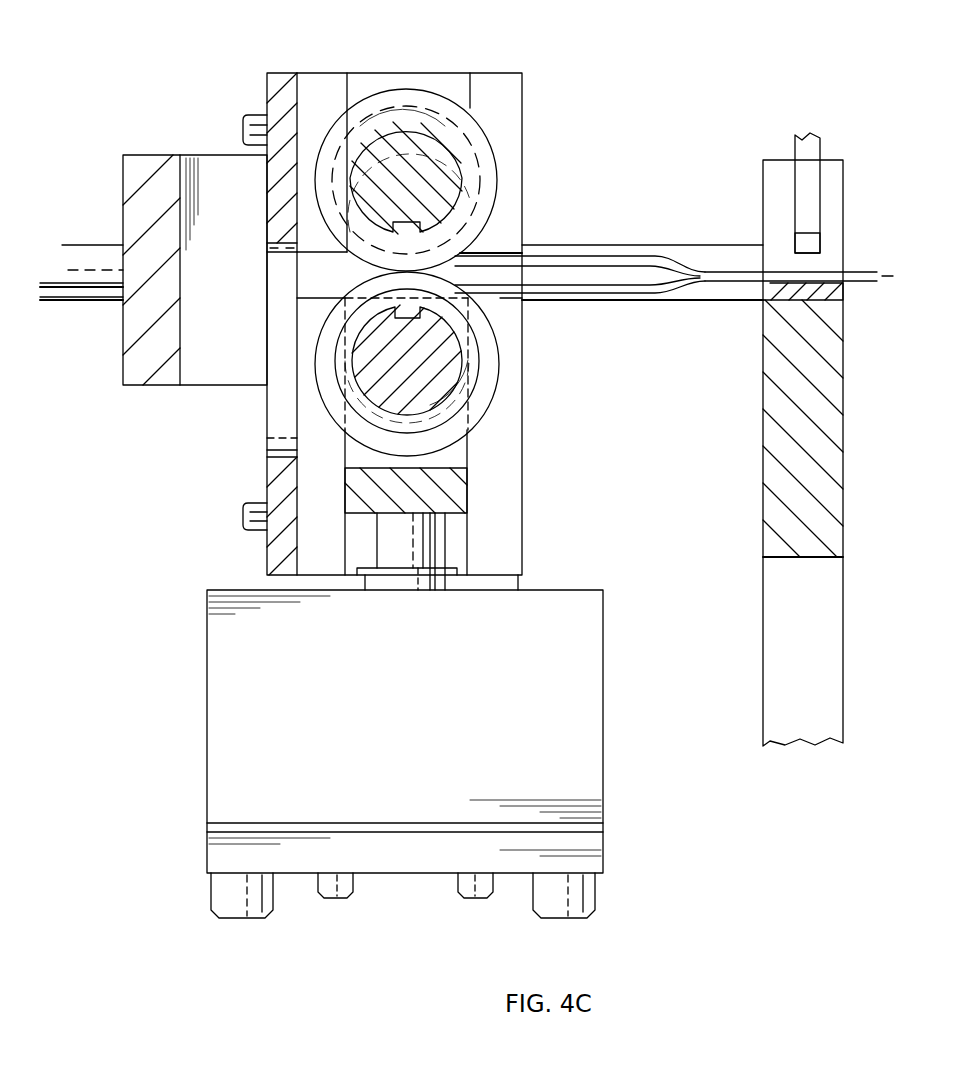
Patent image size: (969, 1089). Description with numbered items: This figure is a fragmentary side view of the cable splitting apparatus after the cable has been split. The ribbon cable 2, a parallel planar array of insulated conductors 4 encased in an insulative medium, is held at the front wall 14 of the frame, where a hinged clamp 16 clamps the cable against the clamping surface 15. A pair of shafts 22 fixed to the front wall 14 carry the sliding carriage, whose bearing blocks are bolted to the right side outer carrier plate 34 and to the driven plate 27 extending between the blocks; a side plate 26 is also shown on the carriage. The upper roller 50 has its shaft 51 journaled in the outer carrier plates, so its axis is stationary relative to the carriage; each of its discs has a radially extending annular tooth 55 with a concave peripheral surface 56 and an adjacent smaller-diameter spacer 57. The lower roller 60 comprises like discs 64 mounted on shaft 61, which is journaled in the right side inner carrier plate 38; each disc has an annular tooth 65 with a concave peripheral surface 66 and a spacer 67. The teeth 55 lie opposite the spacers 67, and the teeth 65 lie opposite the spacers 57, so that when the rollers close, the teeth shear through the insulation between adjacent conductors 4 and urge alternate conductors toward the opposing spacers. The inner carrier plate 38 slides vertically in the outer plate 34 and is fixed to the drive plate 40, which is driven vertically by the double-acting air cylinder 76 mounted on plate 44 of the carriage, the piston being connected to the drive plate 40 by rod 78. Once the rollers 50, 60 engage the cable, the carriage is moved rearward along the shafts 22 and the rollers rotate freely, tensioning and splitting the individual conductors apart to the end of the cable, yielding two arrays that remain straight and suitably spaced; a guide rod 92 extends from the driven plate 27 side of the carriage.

The ribbon cable 2 is at (745, 270).
The conductors 4 is at (596, 286).
The front wall 14 is at (772, 425).
The clamping surface 15 is at (765, 292).
The hinged clamp 16 is at (808, 178).
The shafts 22 is at (702, 262).
The side plate 26 is at (282, 80).
The driven plate 27 is at (168, 160).
The right side outer carrier plate 34 is at (307, 482).
The right side inner carrier plate 38 is at (457, 475).
The drive plate 40 is at (457, 507).
The plate 44 is at (420, 848).
The upper roller 50 is at (456, 149).
The shaft 51 is at (452, 172).
The annular tooth 55 is at (432, 86).
The concave peripheral surface 56 is at (488, 130).
The spacer 57 is at (503, 148).
The lower roller 60 is at (405, 374).
The shaft 61 is at (453, 345).
The discs 64 is at (327, 347).
The annular tooth 65 is at (483, 405).
The concave peripheral surface 66 is at (503, 375).
The spacer 67 is at (445, 418).
The air cylinder 76 is at (232, 668).
The rod 78 is at (385, 540).
The feed rod 92 is at (78, 258).